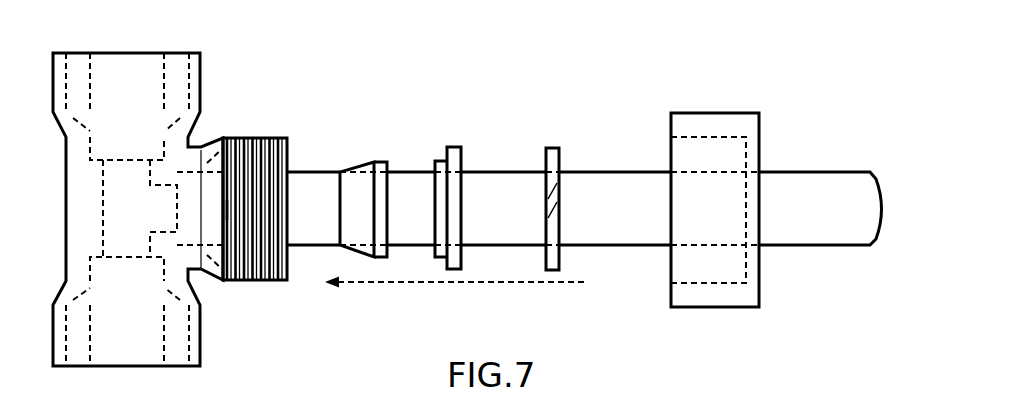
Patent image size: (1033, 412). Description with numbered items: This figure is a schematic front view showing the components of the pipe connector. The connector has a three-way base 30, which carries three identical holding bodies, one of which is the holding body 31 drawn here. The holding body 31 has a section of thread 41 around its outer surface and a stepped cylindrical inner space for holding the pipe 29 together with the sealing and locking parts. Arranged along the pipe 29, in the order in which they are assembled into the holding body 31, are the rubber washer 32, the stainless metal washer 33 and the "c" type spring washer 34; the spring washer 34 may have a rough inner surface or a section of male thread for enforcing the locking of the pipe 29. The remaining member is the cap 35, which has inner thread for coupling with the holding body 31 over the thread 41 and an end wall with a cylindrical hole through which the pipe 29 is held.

The pipe 29 is at (877, 193).
The three-way base 30 is at (208, 107).
The holding body 31 is at (300, 138).
The rubber washer 32 is at (390, 155).
The stainless metal washer 33 is at (465, 155).
The "c" type spring washer 34 is at (565, 157).
The cap 35 is at (713, 110).
The thread 41 is at (258, 283).